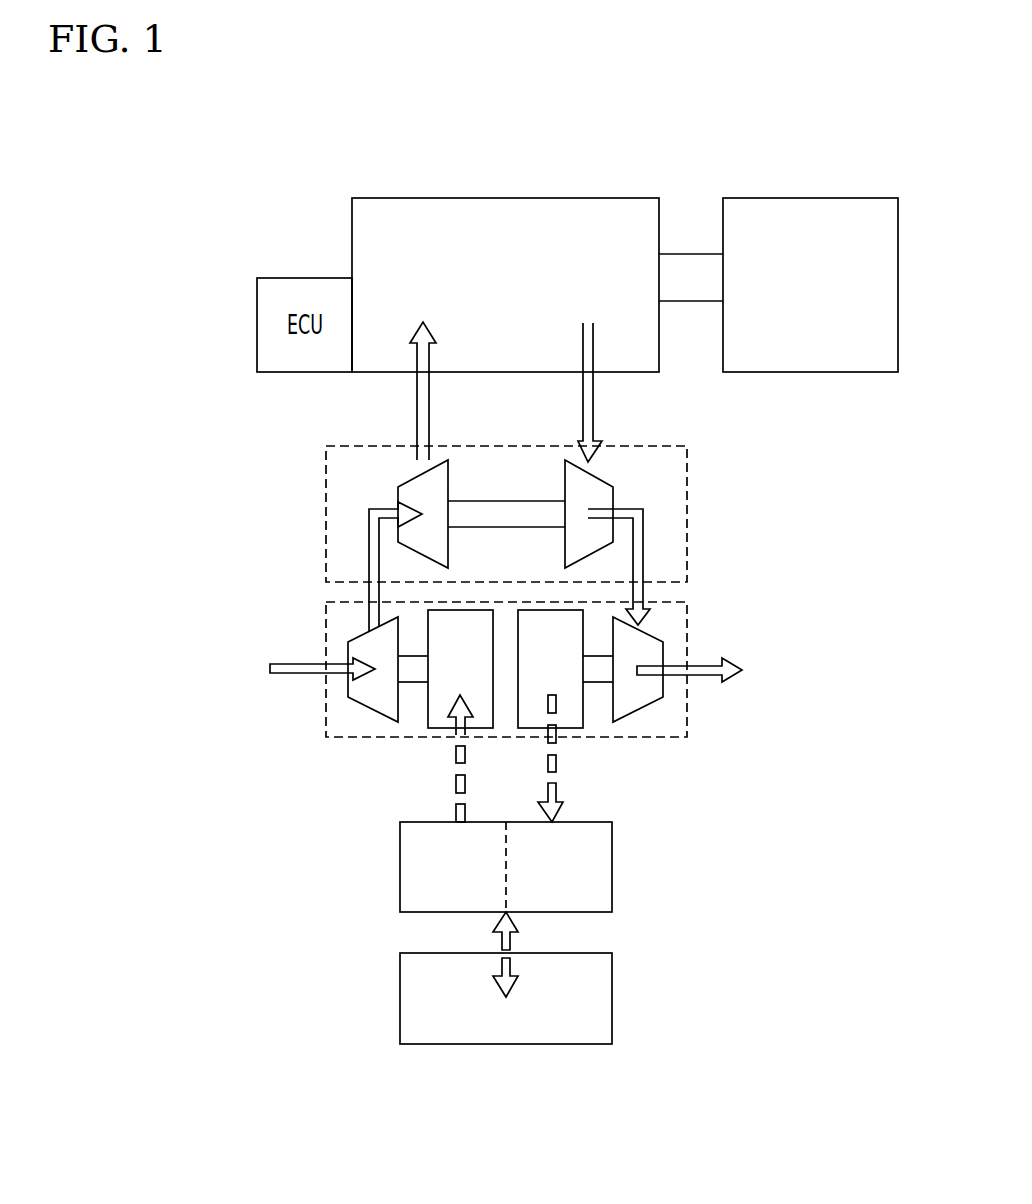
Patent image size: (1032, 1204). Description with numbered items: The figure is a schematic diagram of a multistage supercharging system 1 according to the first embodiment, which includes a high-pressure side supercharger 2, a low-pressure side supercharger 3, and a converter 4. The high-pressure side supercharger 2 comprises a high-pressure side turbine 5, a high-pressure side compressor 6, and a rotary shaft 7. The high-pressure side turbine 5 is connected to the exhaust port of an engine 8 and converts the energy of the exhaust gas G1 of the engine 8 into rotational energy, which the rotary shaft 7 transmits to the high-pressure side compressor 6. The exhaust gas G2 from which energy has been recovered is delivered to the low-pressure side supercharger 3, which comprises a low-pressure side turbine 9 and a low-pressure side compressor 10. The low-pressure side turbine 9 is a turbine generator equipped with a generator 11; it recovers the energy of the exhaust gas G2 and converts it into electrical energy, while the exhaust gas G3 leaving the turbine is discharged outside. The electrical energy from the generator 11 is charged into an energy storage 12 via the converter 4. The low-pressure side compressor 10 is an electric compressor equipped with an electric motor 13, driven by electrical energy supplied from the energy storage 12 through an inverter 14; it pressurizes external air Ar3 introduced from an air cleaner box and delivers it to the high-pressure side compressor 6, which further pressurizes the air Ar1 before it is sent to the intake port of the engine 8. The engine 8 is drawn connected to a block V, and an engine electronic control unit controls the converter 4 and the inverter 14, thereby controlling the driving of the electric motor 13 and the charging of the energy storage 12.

The multistage supercharging system 1 is at (216, 150).
The high-pressure side supercharger 2 is at (316, 492).
The low-pressure side supercharger 3 is at (316, 630).
The converter 4 is at (612, 863).
The high-pressure side turbine 5 is at (603, 478).
The high-pressure side compressor 6 is at (410, 480).
The rotary shaft 7 is at (507, 500).
The engine 8 is at (518, 215).
The low-pressure side turbine 9 is at (652, 632).
The low-pressure side compressor 10 is at (367, 695).
The generator 11 is at (577, 718).
The energy storage 12 is at (612, 1000).
The electric motor 13 is at (435, 716).
The inverter 14 is at (400, 866).
The vehicle V is at (792, 198).
The air Ar1 is at (369, 553).
The external air Ar3 is at (292, 675).
The exhaust gas G1 is at (593, 395).
The exhaust gas G2 is at (643, 555).
The exhaust gas G3 is at (698, 676).